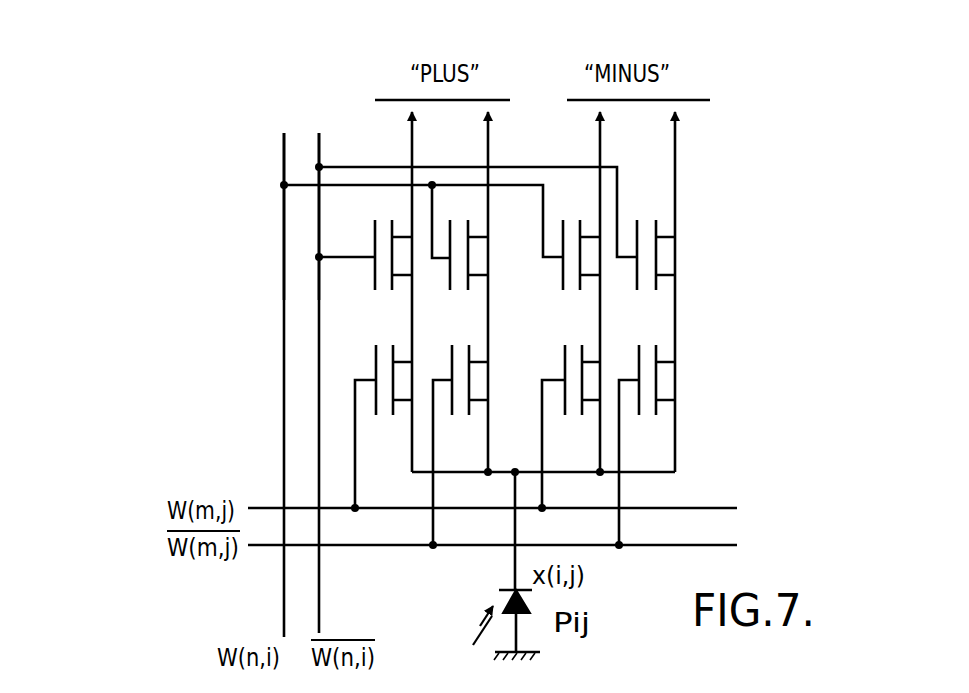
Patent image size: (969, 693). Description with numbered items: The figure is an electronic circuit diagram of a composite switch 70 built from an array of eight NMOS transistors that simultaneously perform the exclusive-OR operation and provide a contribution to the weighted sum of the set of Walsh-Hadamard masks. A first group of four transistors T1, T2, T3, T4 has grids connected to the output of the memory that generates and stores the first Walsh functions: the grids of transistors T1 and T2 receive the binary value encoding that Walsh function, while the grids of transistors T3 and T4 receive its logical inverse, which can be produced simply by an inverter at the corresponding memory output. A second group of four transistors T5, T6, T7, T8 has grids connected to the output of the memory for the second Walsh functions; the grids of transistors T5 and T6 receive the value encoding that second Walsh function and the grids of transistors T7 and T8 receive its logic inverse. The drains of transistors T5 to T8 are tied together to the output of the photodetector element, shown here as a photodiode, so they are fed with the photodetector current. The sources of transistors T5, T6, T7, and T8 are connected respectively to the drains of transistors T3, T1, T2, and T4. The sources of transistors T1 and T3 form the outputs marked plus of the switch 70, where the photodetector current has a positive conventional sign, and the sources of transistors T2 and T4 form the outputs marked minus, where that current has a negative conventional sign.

The composite switch 70 is at (322, 110).
The NMOS transistor T1 is at (470, 257).
The NMOS transistor T2 is at (562, 268).
The NMOS transistor T3 is at (372, 246).
The NMOS transistor T4 is at (658, 261).
The NMOS transistor T5 is at (374, 367).
The NMOS transistor T6 is at (564, 359).
The NMOS transistor T7 is at (471, 388).
The NMOS transistor T8 is at (658, 383).